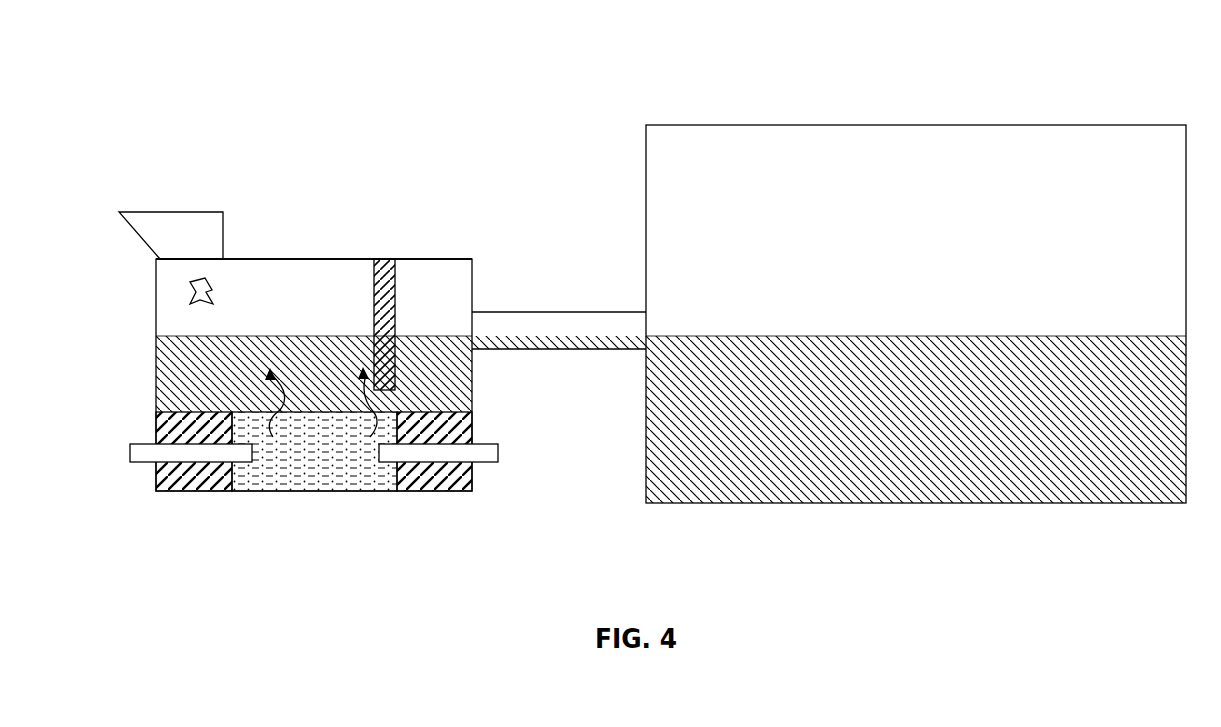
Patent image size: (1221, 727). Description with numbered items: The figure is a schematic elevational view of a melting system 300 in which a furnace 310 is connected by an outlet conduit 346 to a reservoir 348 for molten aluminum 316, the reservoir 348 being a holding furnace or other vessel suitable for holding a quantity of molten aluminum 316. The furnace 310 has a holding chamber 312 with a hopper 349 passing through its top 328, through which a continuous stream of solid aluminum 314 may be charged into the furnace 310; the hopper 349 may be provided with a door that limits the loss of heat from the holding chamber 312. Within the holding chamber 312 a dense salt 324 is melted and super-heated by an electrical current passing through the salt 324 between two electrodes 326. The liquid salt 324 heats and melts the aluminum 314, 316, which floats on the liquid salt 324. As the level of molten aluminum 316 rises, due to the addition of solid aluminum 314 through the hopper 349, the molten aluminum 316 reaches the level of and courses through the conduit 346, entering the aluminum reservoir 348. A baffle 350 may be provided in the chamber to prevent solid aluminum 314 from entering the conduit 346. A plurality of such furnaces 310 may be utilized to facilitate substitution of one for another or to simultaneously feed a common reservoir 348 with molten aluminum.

The system 300 is at (170, 66).
The furnace 310 is at (290, 182).
The holding chamber 312 is at (271, 254).
The solid aluminum 314 is at (186, 298).
The molten aluminum 316 is at (240, 372).
The dense salt 324 is at (338, 467).
The electrodes 326 is at (130, 450).
The top 328 is at (328, 258).
The outlet conduit 346 is at (555, 311).
The reservoir 348 is at (868, 108).
The hopper 349 is at (172, 211).
The baffle 350 is at (380, 274).